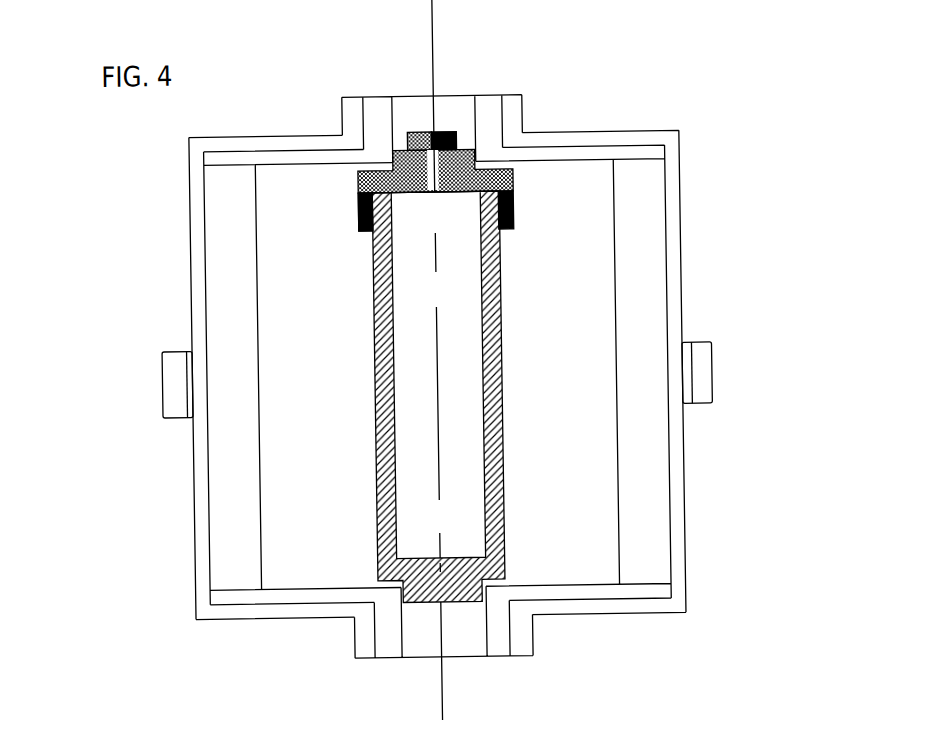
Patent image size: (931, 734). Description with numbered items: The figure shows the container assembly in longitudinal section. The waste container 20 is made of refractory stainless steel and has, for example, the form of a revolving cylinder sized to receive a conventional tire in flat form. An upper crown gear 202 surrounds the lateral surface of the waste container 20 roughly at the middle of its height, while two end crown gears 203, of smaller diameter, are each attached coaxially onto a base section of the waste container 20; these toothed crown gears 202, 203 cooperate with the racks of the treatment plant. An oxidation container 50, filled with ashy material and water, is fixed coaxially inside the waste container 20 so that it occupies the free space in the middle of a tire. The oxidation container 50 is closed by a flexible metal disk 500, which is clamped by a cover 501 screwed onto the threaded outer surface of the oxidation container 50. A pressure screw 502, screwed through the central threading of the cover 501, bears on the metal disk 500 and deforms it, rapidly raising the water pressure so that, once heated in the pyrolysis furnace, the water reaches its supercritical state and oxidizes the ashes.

The waste container 20 is at (194, 306).
The oxidation container 50 is at (504, 326).
The upper crown gear 202 is at (170, 394).
The end crown gear 203 is at (344, 102).
The metal disk 500 is at (517, 174).
The cover 501 is at (361, 194).
The pressure screw 502 is at (460, 148).